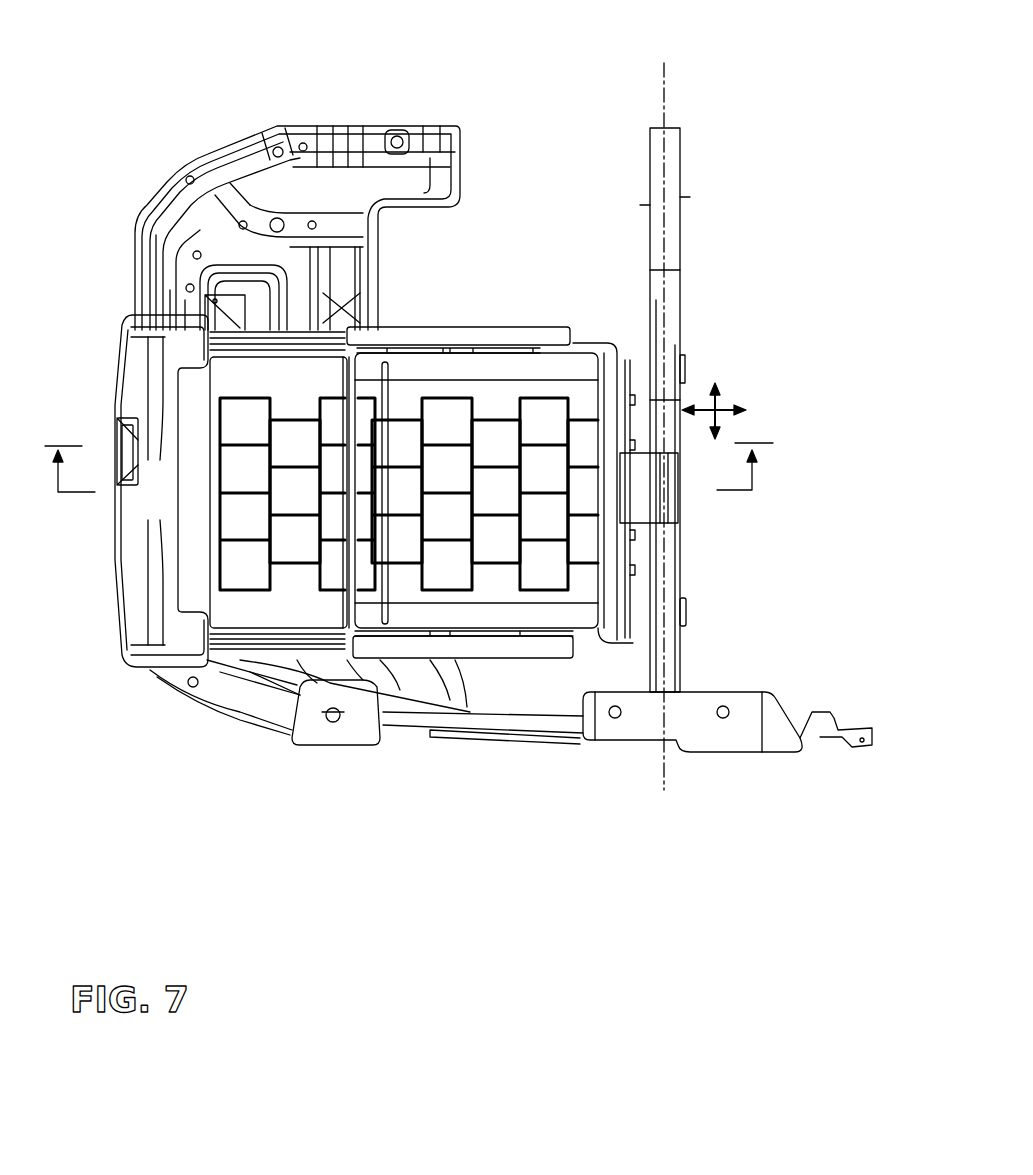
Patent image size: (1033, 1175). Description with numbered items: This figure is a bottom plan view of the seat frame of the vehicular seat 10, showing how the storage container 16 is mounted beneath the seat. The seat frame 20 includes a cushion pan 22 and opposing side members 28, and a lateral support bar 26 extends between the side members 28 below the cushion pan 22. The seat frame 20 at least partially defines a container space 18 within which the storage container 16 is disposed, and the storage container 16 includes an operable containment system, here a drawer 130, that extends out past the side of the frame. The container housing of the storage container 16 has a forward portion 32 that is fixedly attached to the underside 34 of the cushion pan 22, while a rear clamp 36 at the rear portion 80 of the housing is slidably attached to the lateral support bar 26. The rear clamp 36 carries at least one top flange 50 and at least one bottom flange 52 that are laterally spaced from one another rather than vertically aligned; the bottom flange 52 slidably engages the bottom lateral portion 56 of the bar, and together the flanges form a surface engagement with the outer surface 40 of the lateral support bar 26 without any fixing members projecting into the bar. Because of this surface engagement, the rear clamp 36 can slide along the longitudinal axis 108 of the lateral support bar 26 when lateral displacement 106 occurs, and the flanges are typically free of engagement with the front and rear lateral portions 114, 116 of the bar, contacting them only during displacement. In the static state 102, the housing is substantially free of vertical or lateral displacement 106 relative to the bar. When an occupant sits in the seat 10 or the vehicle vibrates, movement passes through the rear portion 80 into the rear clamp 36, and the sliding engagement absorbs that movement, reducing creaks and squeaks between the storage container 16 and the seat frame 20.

The vehicular seat 10 is at (400, 82).
The storage container 16 is at (500, 312).
The container space 18 is at (434, 243).
The seat frame 20 is at (308, 116).
The cushion pan 22 is at (178, 197).
The lateral support bar 26 is at (692, 156).
The side members 28 is at (477, 740).
The forward portion 32 is at (195, 272).
The underside 34 is at (178, 288).
The rear clamp 36 is at (706, 537).
The outer surface 40 is at (676, 398).
The top flange 50 is at (686, 612).
The bottom flange 52 is at (650, 496).
The bottom lateral portion 56 is at (668, 302).
The rear portion 80 is at (620, 335).
The static state 102 is at (692, 272).
The lateral displacement 106 is at (718, 408).
The longitudinal axis 108 is at (665, 108).
The front lateral portion 114 is at (650, 205).
The rear lateral portion 116 is at (680, 197).
The drawer 130 is at (133, 352).